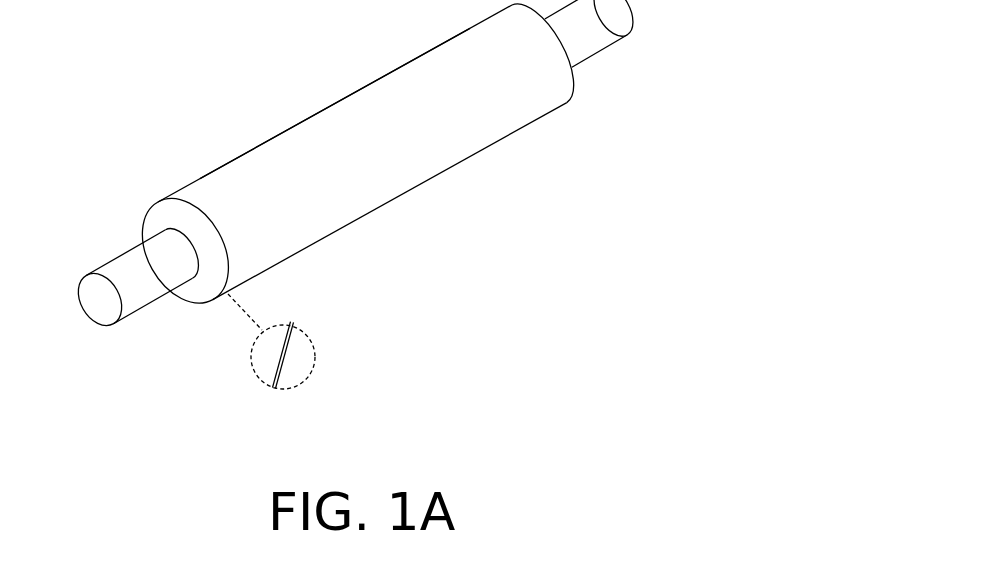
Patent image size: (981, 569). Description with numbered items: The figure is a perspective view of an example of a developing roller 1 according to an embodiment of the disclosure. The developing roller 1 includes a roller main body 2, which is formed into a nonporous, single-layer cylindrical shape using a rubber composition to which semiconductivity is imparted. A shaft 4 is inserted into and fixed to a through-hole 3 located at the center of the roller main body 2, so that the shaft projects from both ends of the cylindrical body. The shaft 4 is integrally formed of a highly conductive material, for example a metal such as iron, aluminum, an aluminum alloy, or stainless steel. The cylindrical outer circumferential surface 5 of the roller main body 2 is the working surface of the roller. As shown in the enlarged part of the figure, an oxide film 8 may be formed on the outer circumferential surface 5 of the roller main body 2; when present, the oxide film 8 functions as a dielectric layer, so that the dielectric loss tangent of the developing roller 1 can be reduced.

The developing roller 1 is at (218, 30).
The roller main body 2 is at (405, 196).
The through-hole 3 is at (178, 290).
The shaft 4 is at (98, 297).
The outer circumferential surface 5 is at (347, 128).
The oxide film 8 is at (286, 350).